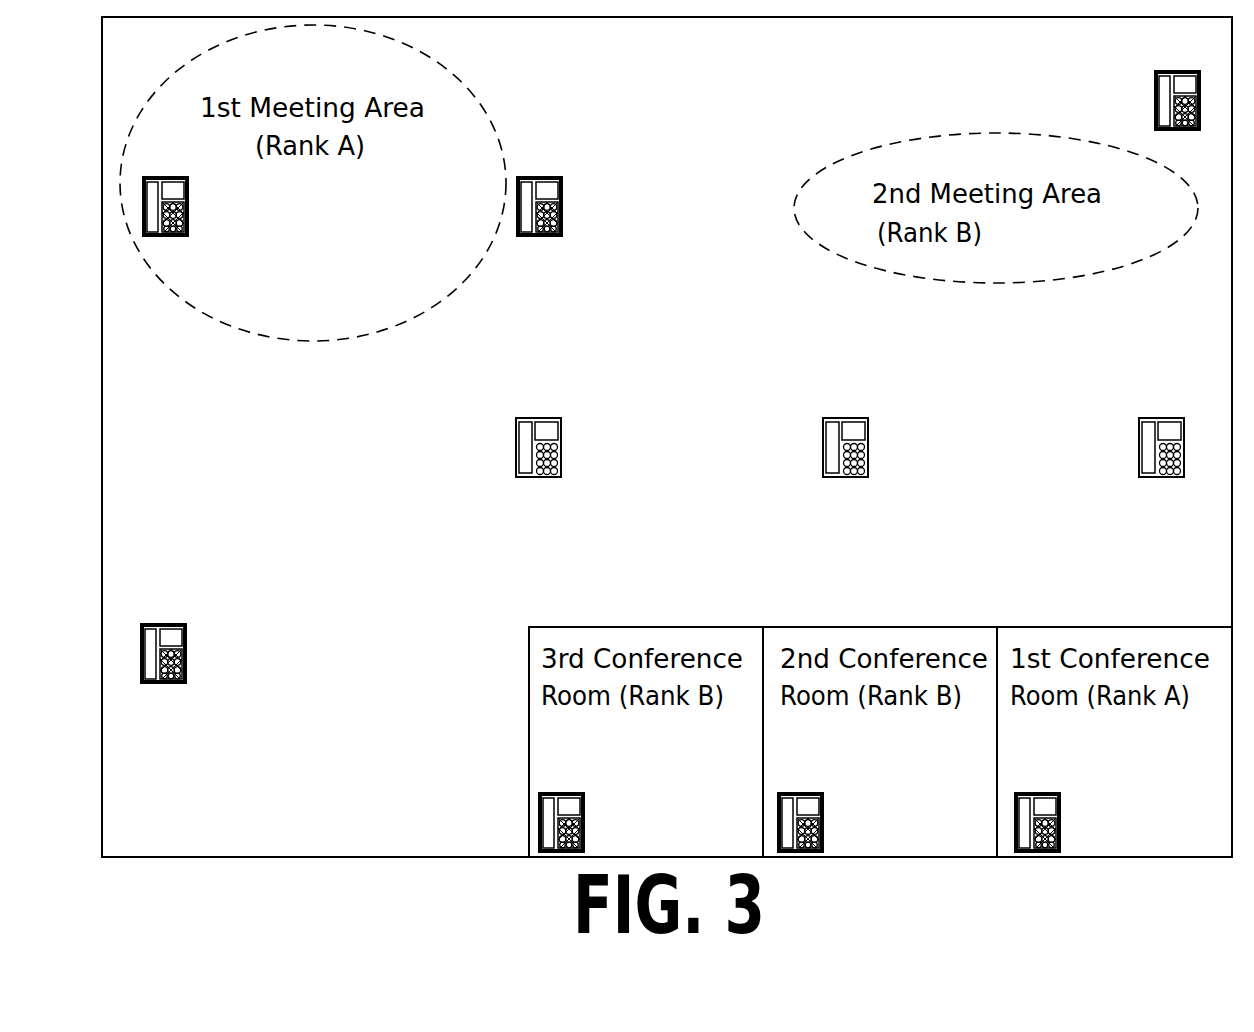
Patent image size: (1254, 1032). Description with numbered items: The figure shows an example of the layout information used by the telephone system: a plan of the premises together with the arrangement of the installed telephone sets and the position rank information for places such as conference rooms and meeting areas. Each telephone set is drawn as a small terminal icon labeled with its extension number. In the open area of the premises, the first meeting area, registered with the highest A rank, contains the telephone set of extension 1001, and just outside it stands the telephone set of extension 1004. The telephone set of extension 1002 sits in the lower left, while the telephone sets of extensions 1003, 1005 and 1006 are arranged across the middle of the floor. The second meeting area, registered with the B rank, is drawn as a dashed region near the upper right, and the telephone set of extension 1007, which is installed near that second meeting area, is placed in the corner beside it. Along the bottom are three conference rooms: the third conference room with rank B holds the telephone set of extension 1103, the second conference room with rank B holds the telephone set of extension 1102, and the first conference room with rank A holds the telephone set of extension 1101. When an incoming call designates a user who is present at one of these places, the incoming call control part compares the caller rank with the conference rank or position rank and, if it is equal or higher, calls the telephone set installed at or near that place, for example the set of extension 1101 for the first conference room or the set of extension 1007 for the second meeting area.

The extension 1001 is at (222, 185).
The extension 1002 is at (221, 630).
The extension 1003 is at (591, 428).
The extension 1004 is at (591, 186).
The extension 1005 is at (896, 424).
The extension 1006 is at (1138, 447).
The extension 1007 is at (1153, 97).
The extension 1101 is at (1092, 794).
The extension 1102 is at (858, 794).
The extension 1103 is at (622, 792).